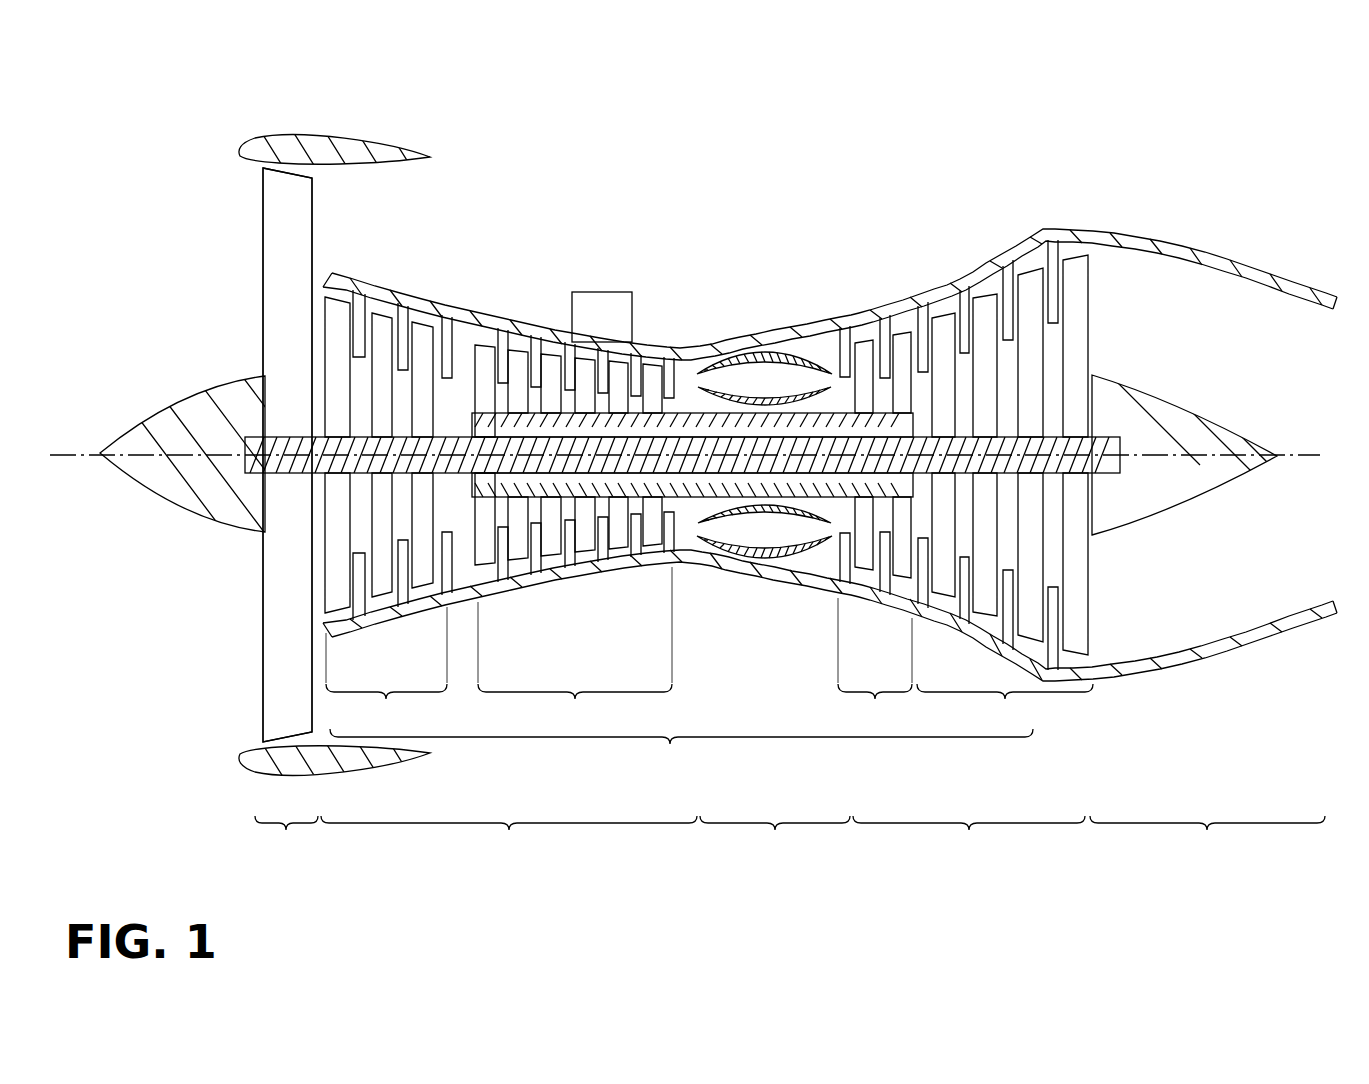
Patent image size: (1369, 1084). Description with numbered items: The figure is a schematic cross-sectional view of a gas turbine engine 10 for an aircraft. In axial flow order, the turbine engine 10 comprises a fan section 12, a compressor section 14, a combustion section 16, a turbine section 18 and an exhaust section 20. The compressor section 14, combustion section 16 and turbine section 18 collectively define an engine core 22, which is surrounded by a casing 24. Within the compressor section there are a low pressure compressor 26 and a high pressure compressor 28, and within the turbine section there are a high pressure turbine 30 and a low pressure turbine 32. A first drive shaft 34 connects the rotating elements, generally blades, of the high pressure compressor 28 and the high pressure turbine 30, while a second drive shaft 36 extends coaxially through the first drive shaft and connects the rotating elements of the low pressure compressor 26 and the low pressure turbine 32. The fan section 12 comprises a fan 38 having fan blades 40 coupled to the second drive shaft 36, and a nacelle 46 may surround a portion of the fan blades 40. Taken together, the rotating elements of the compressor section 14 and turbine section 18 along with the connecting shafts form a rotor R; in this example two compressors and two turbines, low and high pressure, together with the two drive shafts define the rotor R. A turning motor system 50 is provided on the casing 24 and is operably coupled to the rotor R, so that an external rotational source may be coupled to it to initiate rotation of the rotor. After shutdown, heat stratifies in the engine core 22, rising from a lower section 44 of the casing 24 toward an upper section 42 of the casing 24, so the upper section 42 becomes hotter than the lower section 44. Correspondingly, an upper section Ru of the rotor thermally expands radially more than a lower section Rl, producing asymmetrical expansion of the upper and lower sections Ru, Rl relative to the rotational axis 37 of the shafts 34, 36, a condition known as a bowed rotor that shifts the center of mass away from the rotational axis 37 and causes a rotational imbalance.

The gas turbine engine 10 is at (119, 64).
The fan section 12 is at (286, 840).
The compressor section 14 is at (509, 840).
The combustion section 16 is at (775, 840).
The turbine section 18 is at (969, 840).
The exhaust section 20 is at (1207, 840).
The engine core 22 is at (681, 752).
The casing 24 is at (918, 288).
The low pressure compressor 26 is at (388, 511).
The high pressure compressor 28 is at (575, 530).
The high pressure turbine 30 is at (875, 523).
The low pressure turbine 32 is at (1005, 486).
The first drive shaft 34 is at (875, 413).
The second drive shaft 36 is at (248, 470).
The rotational axis 37 is at (1300, 452).
The fan 38 is at (256, 234).
The fan blades 40 is at (272, 684).
The upper section of the casing 42 is at (768, 348).
The lower section of the casing 44 is at (731, 577).
The nacelle 46 is at (372, 131).
The turning motor system 50 is at (590, 324).
The rotor R is at (483, 338).
The upper section of the rotor Ru is at (657, 358).
The lower section of the rotor Rl is at (656, 553).